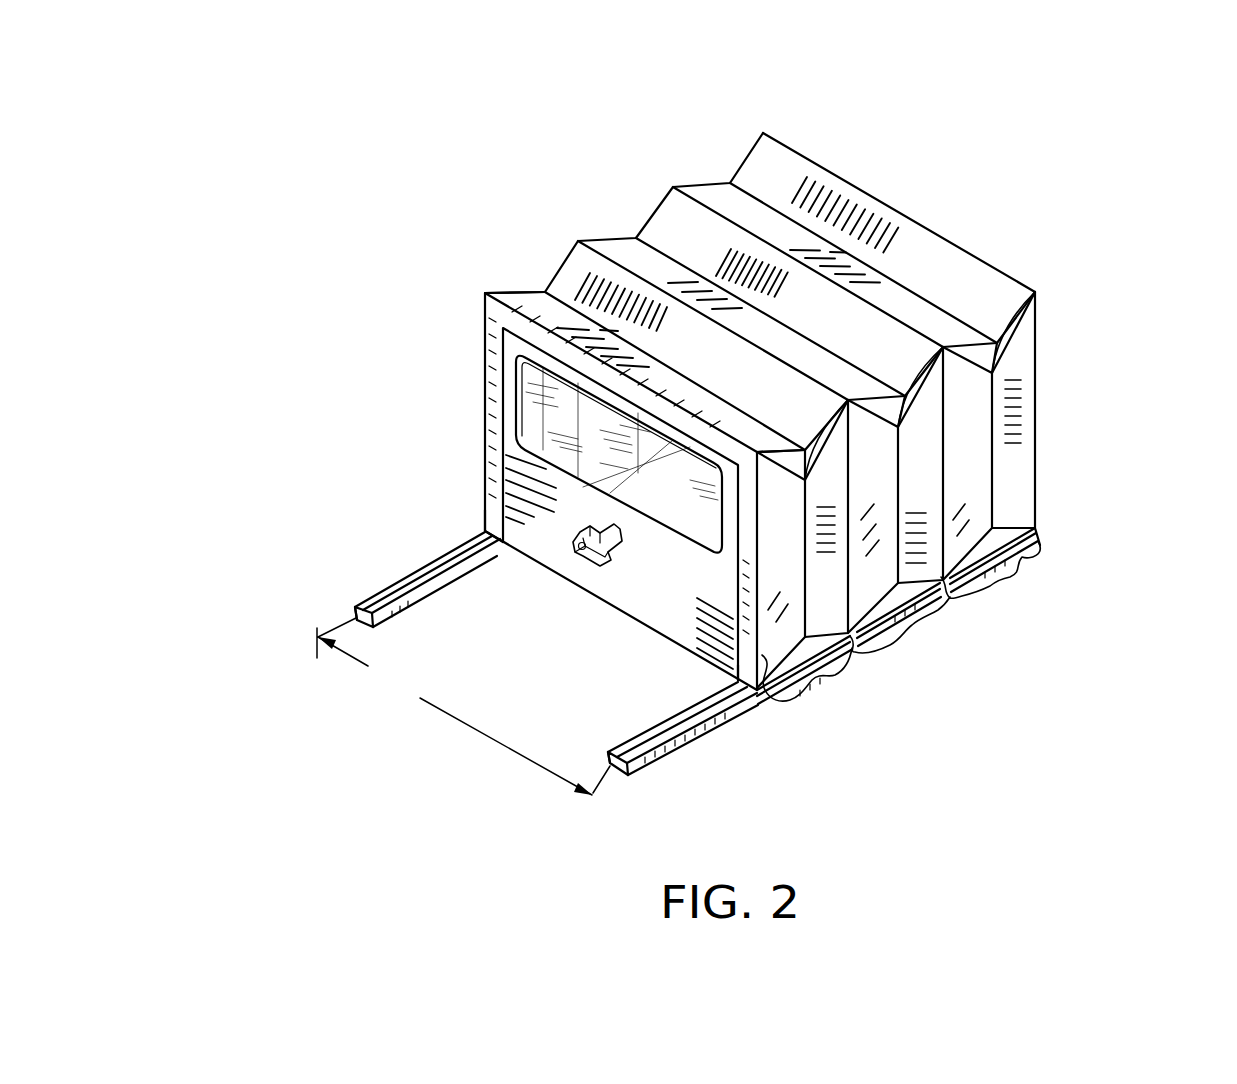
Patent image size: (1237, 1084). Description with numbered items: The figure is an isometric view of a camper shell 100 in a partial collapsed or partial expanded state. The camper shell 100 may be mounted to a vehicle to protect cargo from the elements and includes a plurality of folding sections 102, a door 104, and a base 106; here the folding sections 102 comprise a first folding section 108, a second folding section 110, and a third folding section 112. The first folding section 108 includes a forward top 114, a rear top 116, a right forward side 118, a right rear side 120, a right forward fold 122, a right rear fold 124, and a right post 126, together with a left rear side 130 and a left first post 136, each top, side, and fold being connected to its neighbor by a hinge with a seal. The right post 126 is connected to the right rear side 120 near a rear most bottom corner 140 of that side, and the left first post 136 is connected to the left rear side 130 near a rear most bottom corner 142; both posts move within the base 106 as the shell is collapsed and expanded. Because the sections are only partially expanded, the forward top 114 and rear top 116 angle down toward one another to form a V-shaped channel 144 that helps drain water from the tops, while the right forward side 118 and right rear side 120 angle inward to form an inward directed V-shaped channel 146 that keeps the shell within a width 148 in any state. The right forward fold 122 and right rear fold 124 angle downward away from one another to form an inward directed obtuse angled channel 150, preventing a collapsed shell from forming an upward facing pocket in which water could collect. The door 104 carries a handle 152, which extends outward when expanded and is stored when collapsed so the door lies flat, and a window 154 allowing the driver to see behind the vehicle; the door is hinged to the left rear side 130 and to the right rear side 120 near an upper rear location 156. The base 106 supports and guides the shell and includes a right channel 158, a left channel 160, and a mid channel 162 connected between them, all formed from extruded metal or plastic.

The camper shell 100 is at (1008, 183).
The folding sections 102 is at (868, 196).
The door 104 is at (633, 594).
The base 106 is at (590, 777).
The first folding section 108 is at (808, 680).
The second folding section 110 is at (900, 629).
The third folding section 112 is at (995, 575).
The forward top 114 is at (731, 364).
The rear top 116 is at (701, 409).
The right forward side 118 is at (844, 584).
The right rear side 120 is at (799, 571).
The right forward fold 122 is at (795, 462).
The right rear fold 124 is at (802, 455).
The right post 126 is at (741, 687).
The left rear side 130 is at (528, 387).
The left first post 136 is at (460, 549).
The rear most bottom corner 140 is at (758, 693).
The rear most bottom corner 142 is at (485, 528).
The V-shaped channel 144 is at (540, 284).
The inward directed V-shaped channel 146 is at (853, 638).
The width 148 is at (463, 706).
The inward directed obtuse angled channel 150 is at (790, 453).
The handle 152 is at (604, 556).
The window 154 is at (695, 520).
The upper rear location 156 is at (760, 561).
The right channel 158 is at (680, 728).
The left channel 160 is at (352, 606).
The mid channel 162 is at (993, 528).